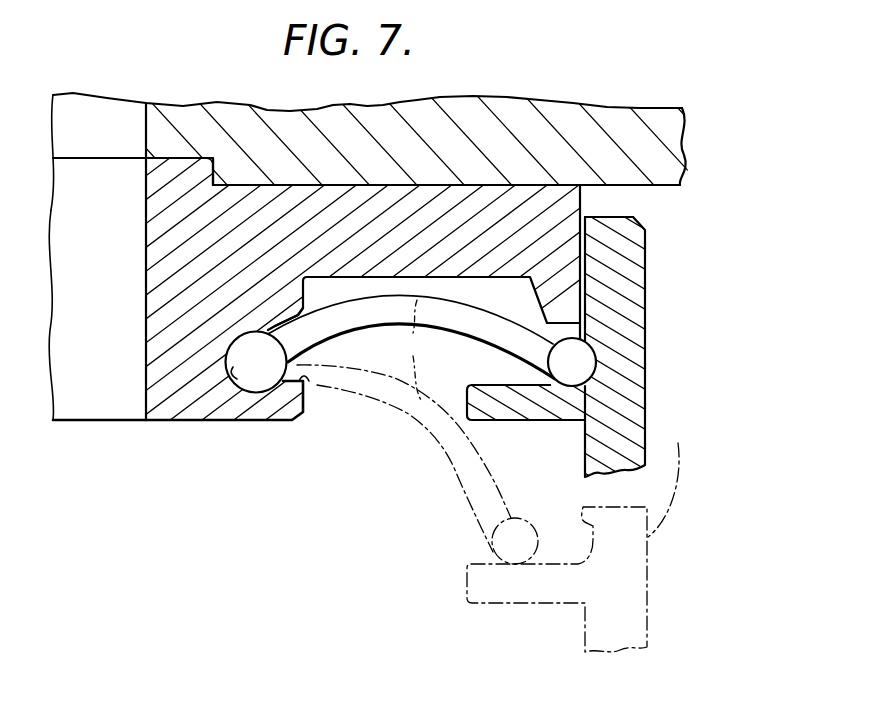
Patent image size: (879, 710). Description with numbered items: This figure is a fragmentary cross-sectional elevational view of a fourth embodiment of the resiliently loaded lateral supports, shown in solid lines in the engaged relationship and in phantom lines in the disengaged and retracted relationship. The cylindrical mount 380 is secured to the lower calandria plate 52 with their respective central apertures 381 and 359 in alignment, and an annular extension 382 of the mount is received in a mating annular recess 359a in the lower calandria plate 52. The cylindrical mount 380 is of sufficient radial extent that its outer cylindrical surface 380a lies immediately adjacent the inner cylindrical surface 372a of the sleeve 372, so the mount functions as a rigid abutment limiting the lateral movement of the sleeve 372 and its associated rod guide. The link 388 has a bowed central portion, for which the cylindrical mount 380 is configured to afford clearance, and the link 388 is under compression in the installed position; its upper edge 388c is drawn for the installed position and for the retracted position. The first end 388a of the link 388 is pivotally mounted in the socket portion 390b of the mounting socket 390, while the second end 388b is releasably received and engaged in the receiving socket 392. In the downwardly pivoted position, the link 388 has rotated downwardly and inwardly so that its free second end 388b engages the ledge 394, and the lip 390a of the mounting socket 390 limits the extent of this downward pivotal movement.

The lower calandria plate 52 is at (478, 153).
The central aperture 359 is at (146, 134).
The annular recess 359a is at (215, 163).
The sleeve 372 is at (646, 428).
The inner cylindrical surface 372a is at (582, 232).
The cylindrical mount 380 is at (262, 259).
The outer cylindrical surface 380a is at (589, 185).
The central aperture 381 is at (146, 279).
The annular extension 382 is at (183, 166).
The link 388 is at (421, 350).
The first end 388a is at (249, 375).
The second end 388b is at (581, 355).
The upper edge of spring arm 388c is at (455, 301).
The mounting socket 390 is at (282, 337).
The lip 390a is at (308, 384).
The socket portion 390b is at (231, 374).
The receiving socket 392 is at (594, 387).
The ledge 394 is at (502, 385).